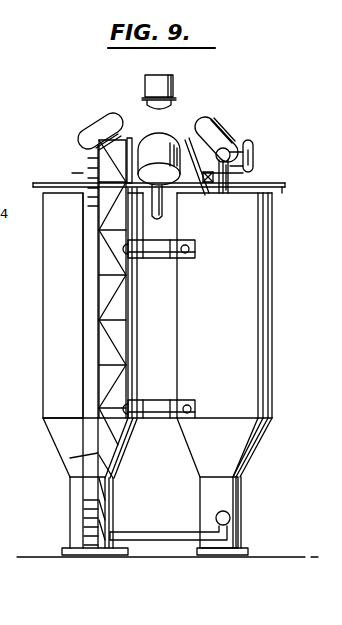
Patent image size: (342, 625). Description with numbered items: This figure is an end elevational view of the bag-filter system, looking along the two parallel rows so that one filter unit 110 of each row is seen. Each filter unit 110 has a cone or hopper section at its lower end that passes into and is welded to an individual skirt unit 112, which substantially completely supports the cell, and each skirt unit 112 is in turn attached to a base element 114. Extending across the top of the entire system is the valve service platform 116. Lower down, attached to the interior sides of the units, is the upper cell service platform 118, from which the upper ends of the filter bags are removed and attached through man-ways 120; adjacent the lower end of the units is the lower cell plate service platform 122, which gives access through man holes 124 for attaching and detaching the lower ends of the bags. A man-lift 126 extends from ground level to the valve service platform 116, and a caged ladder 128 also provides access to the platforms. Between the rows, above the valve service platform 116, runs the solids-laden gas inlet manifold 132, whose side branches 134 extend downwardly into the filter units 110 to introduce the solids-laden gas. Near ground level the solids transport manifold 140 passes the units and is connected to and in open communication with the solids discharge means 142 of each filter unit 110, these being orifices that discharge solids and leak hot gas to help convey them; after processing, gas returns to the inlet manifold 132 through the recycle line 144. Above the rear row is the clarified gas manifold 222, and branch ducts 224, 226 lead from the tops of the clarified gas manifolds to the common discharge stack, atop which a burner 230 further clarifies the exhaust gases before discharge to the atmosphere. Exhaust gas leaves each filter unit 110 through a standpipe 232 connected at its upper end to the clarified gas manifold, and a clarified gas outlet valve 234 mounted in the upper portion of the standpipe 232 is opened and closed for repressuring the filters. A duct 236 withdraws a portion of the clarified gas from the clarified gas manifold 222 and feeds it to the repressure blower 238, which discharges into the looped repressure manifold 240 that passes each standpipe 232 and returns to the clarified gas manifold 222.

The filter unit 110 is at (74, 292).
The skirt unit 112 is at (77, 500).
The base element 114 is at (110, 553).
The valve service platform 116 is at (282, 189).
The upper cell service platform 118 is at (150, 257).
The man-way 120 is at (194, 250).
The lower cell plate service platform 122 is at (150, 414).
The man hole 124 is at (196, 407).
The man-lift 126 is at (113, 375).
The caged ladder 128 is at (93, 455).
The solids-laden gas inlet manifold 132 is at (158, 150).
The side branch 134 is at (128, 152).
The solids transport manifold 140 is at (186, 537).
The solids discharge means 142 is at (228, 534).
The recycle line 144 is at (160, 212).
The clarified gas manifold 222 is at (234, 150).
The branch duct 224 is at (100, 133).
The branch duct 226 is at (221, 140).
The burner 230 is at (157, 93).
The standpipe 232 is at (224, 190).
The clarified gas outlet valve 234 is at (224, 165).
The duct 236 is at (250, 151).
The repressure blower 238 is at (251, 161).
The repressure manifold 240 is at (66, 174).